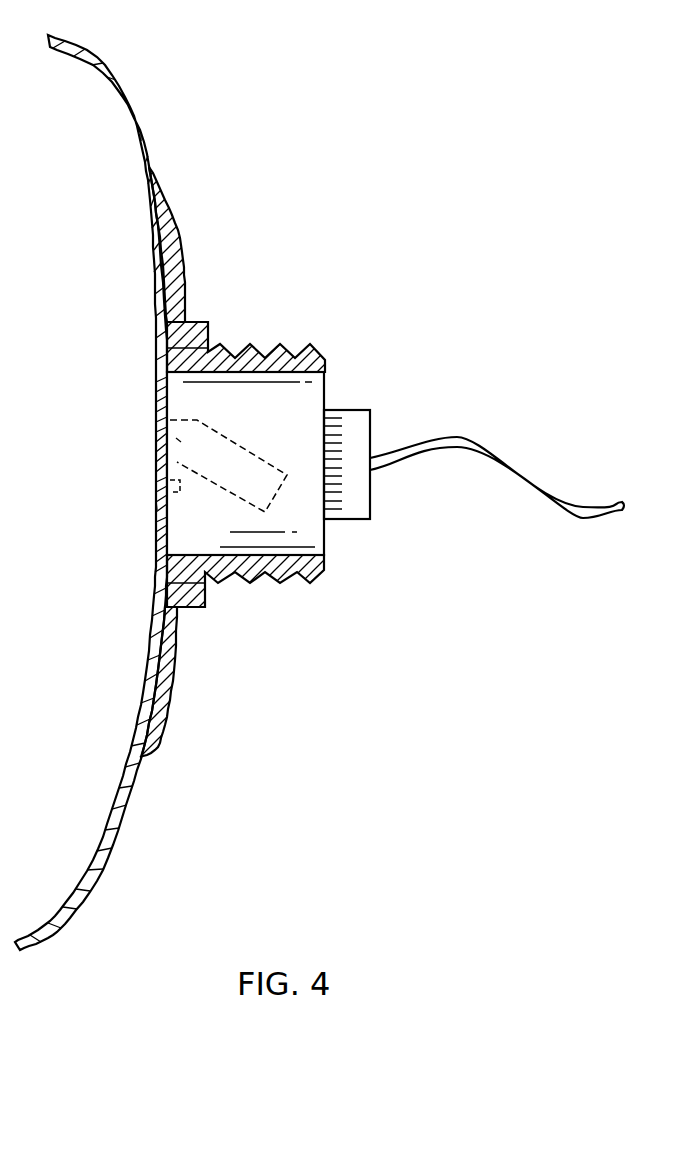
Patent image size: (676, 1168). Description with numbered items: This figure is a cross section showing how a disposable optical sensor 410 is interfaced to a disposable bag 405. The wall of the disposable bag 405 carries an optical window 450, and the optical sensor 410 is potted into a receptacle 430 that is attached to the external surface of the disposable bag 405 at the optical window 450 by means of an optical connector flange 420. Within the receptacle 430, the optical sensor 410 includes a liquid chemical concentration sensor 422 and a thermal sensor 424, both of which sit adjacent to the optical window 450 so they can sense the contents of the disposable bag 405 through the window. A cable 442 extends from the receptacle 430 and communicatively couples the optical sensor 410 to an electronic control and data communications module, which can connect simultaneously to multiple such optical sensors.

The disposable bag 405 is at (102, 71).
The disposable optical sensor 410 is at (243, 446).
The optical connector flange 420 is at (173, 250).
The liquid chemical concentration sensor 422 is at (180, 440).
The thermal sensor 424 is at (178, 494).
The receptacle 430 is at (298, 323).
The cable 442 is at (455, 435).
The optical window 450 is at (157, 505).